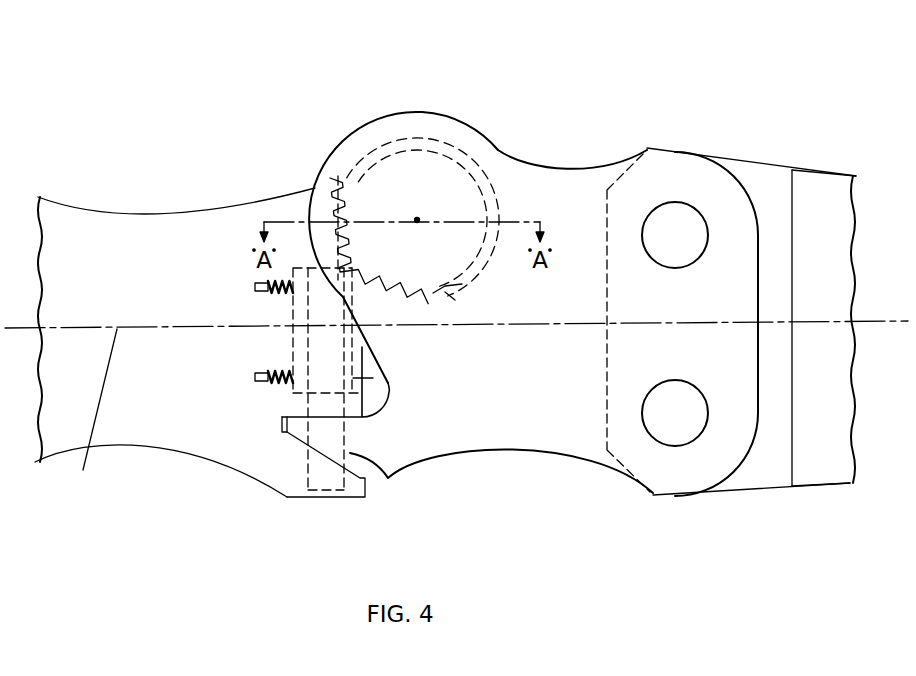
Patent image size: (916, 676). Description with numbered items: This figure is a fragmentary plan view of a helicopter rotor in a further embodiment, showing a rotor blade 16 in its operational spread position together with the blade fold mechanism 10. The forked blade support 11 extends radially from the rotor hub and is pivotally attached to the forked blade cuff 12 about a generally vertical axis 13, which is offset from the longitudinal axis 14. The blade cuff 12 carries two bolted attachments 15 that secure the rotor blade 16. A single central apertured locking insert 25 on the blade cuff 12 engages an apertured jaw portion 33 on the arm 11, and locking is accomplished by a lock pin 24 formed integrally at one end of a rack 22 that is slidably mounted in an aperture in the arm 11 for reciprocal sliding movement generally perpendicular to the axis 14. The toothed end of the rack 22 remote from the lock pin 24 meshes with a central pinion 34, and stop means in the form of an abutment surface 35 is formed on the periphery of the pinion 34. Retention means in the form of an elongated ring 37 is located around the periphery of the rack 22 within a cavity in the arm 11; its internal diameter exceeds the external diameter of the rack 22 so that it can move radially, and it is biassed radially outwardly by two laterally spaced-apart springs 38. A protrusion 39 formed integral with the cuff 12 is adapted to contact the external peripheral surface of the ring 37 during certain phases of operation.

The blade fold mechanism 10 is at (548, 90).
The blade support 11 is at (83, 233).
The blade cuff 12 is at (568, 178).
The vertical axis 13 is at (417, 220).
The longitudinal axis 14 is at (92, 415).
The bolted attachments 15 is at (673, 202).
The rotor blade 16 is at (833, 188).
The rack 22 is at (343, 297).
The lock pin 24 is at (318, 480).
The locking insert 25 is at (388, 479).
The jaw portion 33 is at (280, 462).
The pinion 34 is at (384, 292).
The abutment surface 35 is at (446, 291).
The ring 37 is at (293, 318).
The springs 38 is at (265, 285).
The protrusion 39 is at (389, 386).